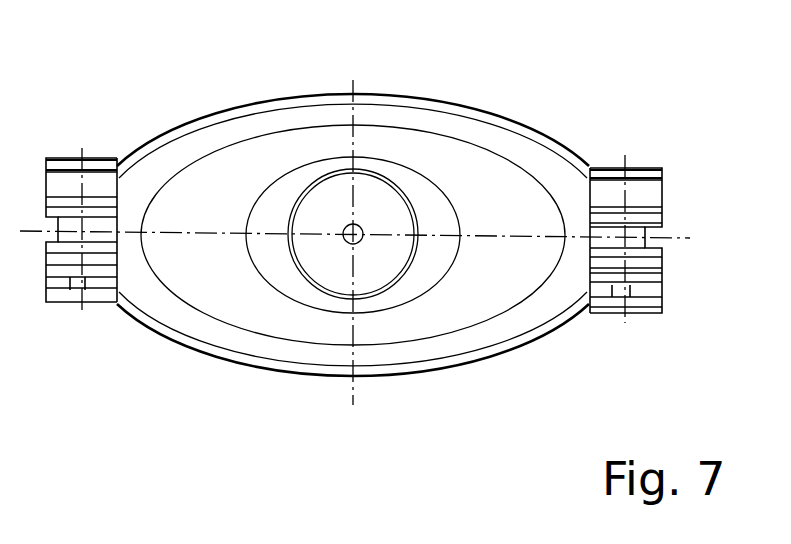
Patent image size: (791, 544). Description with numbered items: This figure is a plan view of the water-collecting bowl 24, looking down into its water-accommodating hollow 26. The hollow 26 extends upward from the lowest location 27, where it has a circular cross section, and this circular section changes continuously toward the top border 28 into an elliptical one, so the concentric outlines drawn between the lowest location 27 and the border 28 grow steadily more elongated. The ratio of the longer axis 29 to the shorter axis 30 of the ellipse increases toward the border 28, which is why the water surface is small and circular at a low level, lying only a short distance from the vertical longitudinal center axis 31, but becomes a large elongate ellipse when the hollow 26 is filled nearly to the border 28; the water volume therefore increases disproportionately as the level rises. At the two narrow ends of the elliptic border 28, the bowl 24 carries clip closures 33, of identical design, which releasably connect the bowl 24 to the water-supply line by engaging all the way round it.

The water-collecting bowl 24 is at (128, 402).
The water-accommodating hollow 26 is at (247, 290).
The lowest location 27 is at (350, 243).
The top border 28 is at (515, 123).
The longer axis 29 is at (492, 237).
The shorter axis 30 is at (355, 145).
The vertical longitudinal center axis 31 is at (353, 234).
The clip closure 33 is at (92, 187).